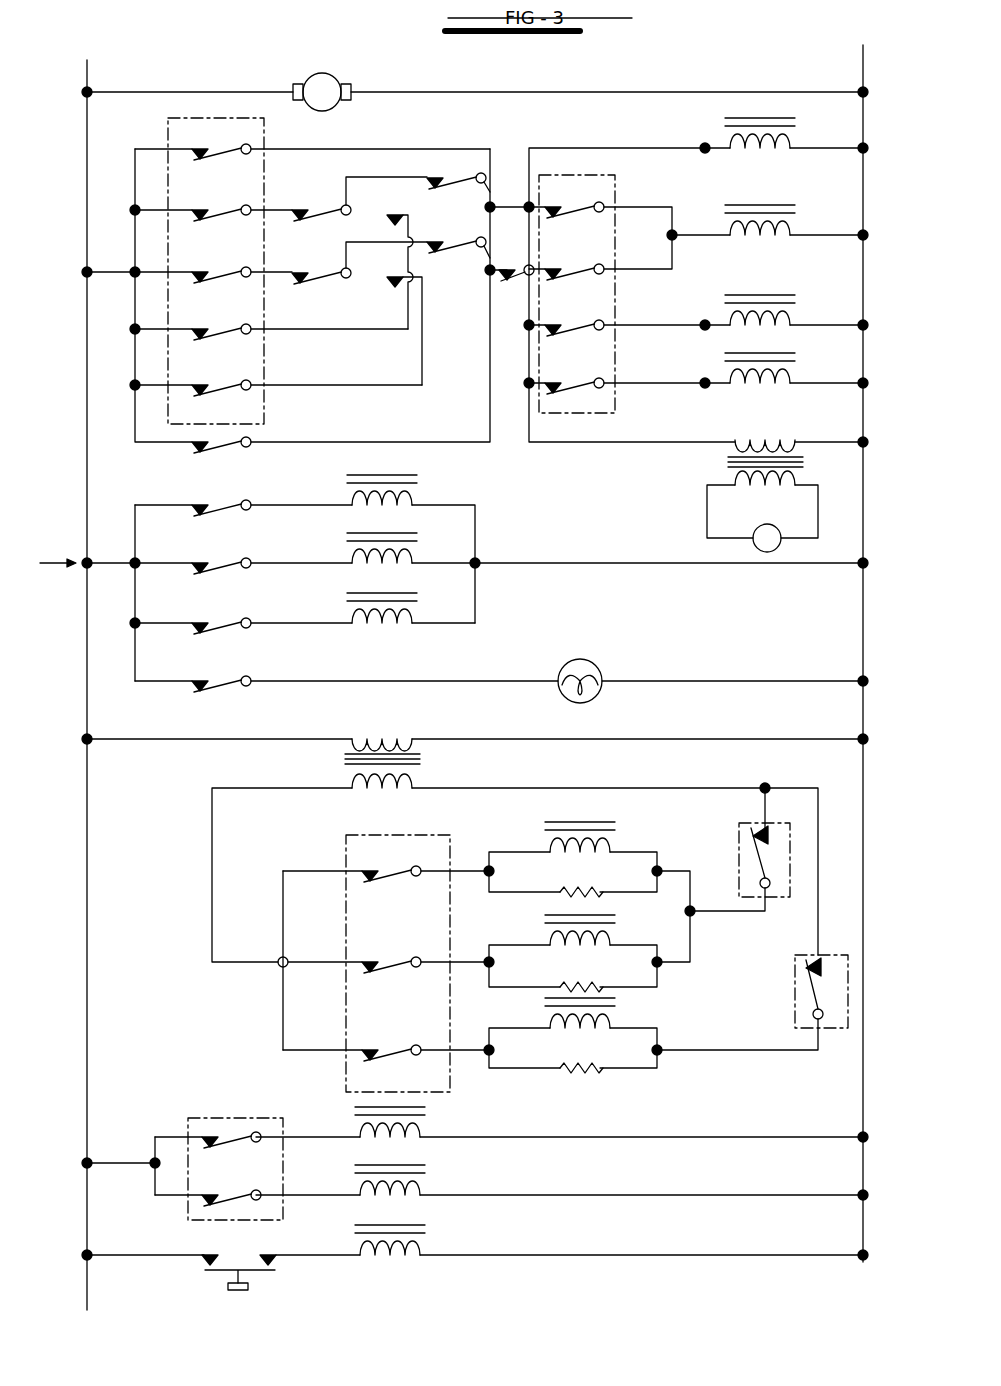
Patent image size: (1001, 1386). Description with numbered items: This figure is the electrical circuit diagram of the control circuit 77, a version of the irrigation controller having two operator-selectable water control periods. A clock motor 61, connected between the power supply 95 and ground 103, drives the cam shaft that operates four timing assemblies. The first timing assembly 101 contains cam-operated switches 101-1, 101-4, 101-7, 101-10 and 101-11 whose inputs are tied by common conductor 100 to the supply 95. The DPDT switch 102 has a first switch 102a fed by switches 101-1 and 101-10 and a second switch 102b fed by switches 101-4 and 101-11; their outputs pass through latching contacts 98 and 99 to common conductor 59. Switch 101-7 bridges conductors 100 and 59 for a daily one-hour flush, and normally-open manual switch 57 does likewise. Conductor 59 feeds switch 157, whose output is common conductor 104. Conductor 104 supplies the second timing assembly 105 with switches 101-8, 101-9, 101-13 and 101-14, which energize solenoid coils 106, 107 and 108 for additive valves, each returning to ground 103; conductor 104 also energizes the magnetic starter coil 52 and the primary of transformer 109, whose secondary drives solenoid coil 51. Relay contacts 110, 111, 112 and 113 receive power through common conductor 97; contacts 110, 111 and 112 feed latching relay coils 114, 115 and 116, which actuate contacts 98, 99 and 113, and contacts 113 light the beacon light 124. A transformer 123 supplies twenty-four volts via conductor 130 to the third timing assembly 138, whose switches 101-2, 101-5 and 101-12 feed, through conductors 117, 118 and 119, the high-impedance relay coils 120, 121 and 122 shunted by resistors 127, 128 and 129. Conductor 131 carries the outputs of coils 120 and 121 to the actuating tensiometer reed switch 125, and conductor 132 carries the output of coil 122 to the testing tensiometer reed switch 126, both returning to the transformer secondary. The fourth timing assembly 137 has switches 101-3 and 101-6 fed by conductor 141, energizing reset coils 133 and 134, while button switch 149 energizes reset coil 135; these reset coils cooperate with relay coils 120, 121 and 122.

The clock motor 61 is at (336, 78).
The ground 103 is at (863, 62).
The power supply 95 is at (87, 150).
The common electrical conductor 100 is at (87, 270).
The first timing assembly 101 is at (277, 146).
The cam-operated switch 101-7 is at (227, 152).
The cam-operated switch 101-1 is at (227, 213).
The cam-operated switch 101-4 is at (227, 275).
The cam-operated switch 101-10 is at (227, 332).
The cam-operated switch 101-11 is at (227, 388).
The common electrical conductor 59 is at (436, 140).
The manually-operated switch 57 is at (227, 451).
The DPDT switch 102 is at (321, 190).
The first switch 102a is at (333, 222).
The second switch 102b is at (335, 283).
The latching relay contacts 98 is at (458, 178).
The latching relay contacts 99 is at (461, 246).
The switch 157 is at (514, 264).
The common conductor 104 is at (580, 148).
The second timing assembly 105 is at (628, 195).
The cam-operated switch 101-8 is at (582, 210).
The cam-operated switch 101-9 is at (582, 272).
The cam-operated switch 101-13 is at (582, 328).
The cam-operated switch 101-14 is at (582, 386).
The magnetic starter coil 52 is at (788, 127).
The solenoid coil 106 is at (788, 217).
The solenoid coil 107 is at (788, 307).
The solenoid coil 108 is at (788, 364).
The transformer 109 is at (796, 467).
The solenoid coil 51 is at (781, 541).
The common electrical conductor 97 is at (114, 562).
The electrical control circuit 77 is at (45, 564).
The relay contact 110 is at (234, 502).
The relay contact 111 is at (234, 560).
The relay contact 112 is at (234, 620).
The latching relay contacts 113 is at (234, 678).
The latching relay coil 114 is at (415, 482).
The latching relay coil 115 is at (415, 544).
The latching relay coil 116 is at (415, 604).
The beacon light 124 is at (597, 660).
The transformer 123 is at (420, 760).
The common electrical conductor 130 is at (212, 880).
The third timing assembly 138 is at (463, 835).
The cam-operated switch 101-2 is at (397, 869).
The cam-operated switch 101-5 is at (397, 960).
The cam-operated switch 101-12 is at (397, 1048).
The common conductor 117 is at (466, 876).
The common conductor 118 is at (466, 968).
The common conductor 119 is at (466, 1056).
The relay coil 120 is at (603, 835).
The relay coil 121 is at (608, 924).
The relay coil 122 is at (608, 1004).
The resistor 127 is at (588, 894).
The resistor 128 is at (588, 986).
The resistor 129 is at (588, 1072).
The common electrical conductor 131 is at (708, 914).
The common electrical conductor 132 is at (745, 1052).
The actuating tensiometer reed switch 125 is at (790, 860).
The testing tensiometer reed switch 126 is at (848, 990).
The common electrical conductor 141 is at (122, 1160).
The fourth timing assembly 137 is at (292, 1113).
The cam-operated switch 101-3 is at (235, 1126).
The cam-operated switch 101-6 is at (235, 1188).
The reset coil 133 is at (420, 1118).
The reset coil 134 is at (420, 1169).
The reset coil 135 is at (420, 1231).
The button switch 149 is at (260, 1272).